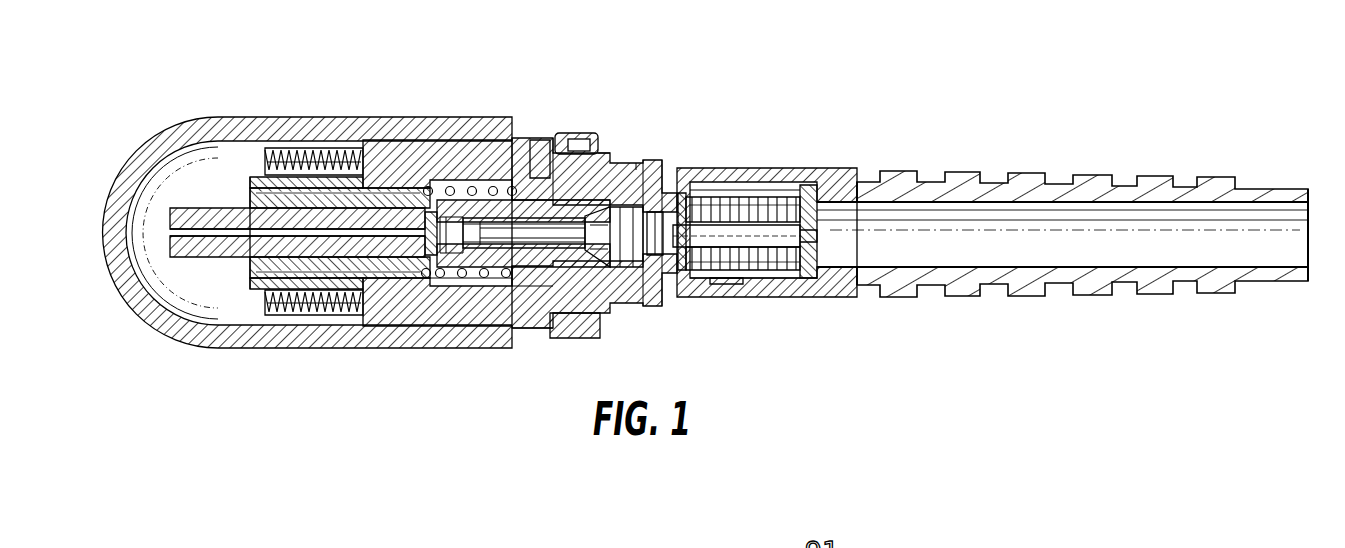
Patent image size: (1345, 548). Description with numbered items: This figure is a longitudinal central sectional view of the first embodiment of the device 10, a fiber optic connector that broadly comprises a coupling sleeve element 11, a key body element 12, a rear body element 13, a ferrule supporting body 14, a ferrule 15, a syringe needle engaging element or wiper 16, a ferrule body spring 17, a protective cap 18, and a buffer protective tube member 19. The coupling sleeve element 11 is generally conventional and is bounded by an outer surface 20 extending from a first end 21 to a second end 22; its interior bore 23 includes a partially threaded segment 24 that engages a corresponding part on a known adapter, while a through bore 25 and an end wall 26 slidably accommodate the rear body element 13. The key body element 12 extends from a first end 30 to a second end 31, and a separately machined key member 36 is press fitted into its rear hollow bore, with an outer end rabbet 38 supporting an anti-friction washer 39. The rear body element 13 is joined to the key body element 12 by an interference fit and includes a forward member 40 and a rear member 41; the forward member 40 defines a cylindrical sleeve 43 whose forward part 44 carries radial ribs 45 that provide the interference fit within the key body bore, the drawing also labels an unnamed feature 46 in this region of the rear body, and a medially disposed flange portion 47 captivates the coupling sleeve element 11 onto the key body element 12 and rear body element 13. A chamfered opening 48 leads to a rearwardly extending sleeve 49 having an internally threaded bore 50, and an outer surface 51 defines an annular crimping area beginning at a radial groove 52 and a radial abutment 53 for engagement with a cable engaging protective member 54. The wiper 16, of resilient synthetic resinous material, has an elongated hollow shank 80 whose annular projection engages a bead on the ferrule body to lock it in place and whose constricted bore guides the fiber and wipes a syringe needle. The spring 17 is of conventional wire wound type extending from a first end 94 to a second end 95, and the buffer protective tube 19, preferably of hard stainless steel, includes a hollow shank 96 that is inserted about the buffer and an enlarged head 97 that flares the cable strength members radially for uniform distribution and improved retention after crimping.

The device 10 is at (642, 158).
The coupling sleeve element 11 is at (540, 145).
The key body element 12 is at (470, 170).
The rear body element 13 is at (650, 165).
The ferrule supporting body 14 is at (378, 188).
The ferrule 15 is at (205, 258).
The syringe needle engaging element (wiper) 16 is at (628, 282).
The ferrule body spring 17 is at (500, 165).
The protective cap 18 is at (248, 150).
The buffer protective tube member 19 is at (695, 290).
The outer surface 20 is at (340, 135).
The first end 21 is at (262, 150).
The second end 22 is at (607, 152).
The interior bore 23 is at (548, 338).
The partially threaded segment 24 is at (300, 310).
The through bore 25 is at (586, 305).
The end wall 26 is at (636, 162).
The first end 30 is at (200, 150).
The second end 31 is at (598, 132).
The key member 36 is at (412, 150).
The outer end rabbet 38 is at (562, 133).
The anti-friction washer 39 is at (571, 302).
The forward member 40 is at (503, 300).
The rear member 41 is at (835, 300).
The cylindrical sleeve 43 is at (535, 150).
The forward part 44 is at (556, 340).
The radial ribs 45 is at (520, 170).
The channel 46 is at (512, 305).
The medially disposed flange portion 47 is at (661, 300).
The chamfered opening 48 is at (718, 285).
The rearwardly extending sleeve 49 is at (786, 300).
The internally threaded bore 50 is at (782, 176).
The outer surface 51 is at (808, 180).
The radial groove 52 is at (760, 300).
The radial abutment 53 is at (736, 298).
The cable engaging protective member 54 is at (896, 300).
The elongated hollow shank 80 is at (448, 300).
The first end 94 is at (432, 180).
The second end 95 is at (495, 285).
The hollow shank 96 is at (820, 180).
The enlarged head 97 is at (776, 172).